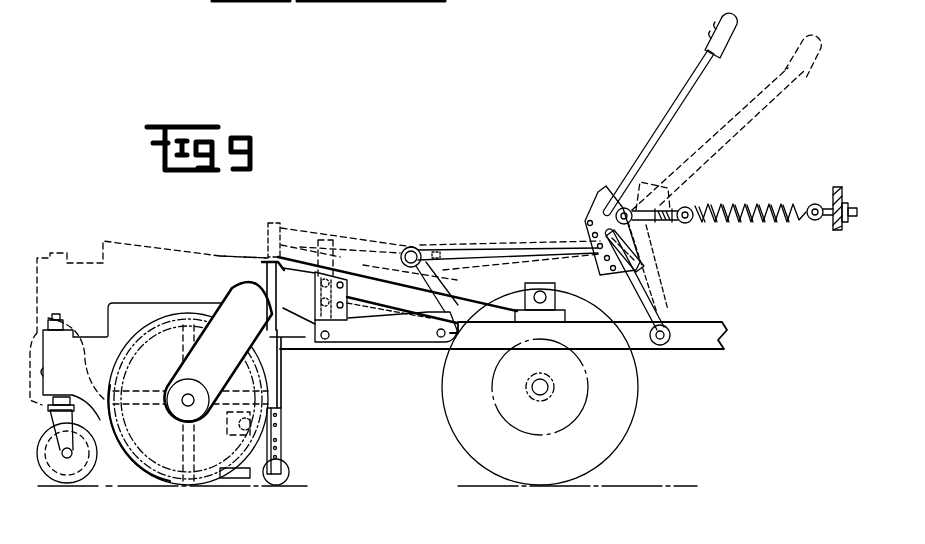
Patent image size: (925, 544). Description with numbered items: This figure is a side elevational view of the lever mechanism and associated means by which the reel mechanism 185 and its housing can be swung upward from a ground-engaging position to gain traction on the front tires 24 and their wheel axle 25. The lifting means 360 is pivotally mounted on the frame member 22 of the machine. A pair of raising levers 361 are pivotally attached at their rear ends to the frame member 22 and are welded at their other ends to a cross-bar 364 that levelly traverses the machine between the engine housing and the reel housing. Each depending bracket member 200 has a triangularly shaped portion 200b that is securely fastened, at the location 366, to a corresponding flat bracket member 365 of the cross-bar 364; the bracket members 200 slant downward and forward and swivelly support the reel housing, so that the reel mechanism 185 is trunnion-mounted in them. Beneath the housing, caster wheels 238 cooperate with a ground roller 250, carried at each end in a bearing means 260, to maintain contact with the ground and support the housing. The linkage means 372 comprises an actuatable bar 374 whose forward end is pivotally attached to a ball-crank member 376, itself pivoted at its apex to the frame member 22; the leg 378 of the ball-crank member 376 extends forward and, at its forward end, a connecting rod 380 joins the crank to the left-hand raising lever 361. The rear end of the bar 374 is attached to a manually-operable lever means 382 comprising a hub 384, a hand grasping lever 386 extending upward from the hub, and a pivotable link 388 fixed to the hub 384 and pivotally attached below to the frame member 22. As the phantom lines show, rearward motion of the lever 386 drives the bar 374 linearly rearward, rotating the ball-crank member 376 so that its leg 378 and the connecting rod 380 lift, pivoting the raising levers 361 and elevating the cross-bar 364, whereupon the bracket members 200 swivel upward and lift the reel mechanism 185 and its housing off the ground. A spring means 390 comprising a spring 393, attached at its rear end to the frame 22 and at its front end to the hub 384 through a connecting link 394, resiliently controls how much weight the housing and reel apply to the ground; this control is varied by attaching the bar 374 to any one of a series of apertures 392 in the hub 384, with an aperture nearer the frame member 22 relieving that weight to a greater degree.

The frame member 22 is at (724, 313).
The front tires 24 is at (612, 434).
The wheel axle 25 is at (540, 395).
The reel mechanism 185 is at (160, 497).
The bracket members 200 is at (263, 320).
The triangularly shaped portion 200b is at (290, 333).
The caster wheels 238 is at (65, 486).
The ground roller 250 is at (282, 486).
The bearing means 260 is at (306, 470).
The means for lifting reel mechanism 360 is at (422, 226).
The raising levers 361 is at (352, 280).
The cross-bar 364 is at (252, 253).
The flat bracket member 365 is at (305, 268).
The fastening 366 is at (268, 273).
The linkage means 372 is at (400, 360).
The actuatable bar 374 is at (508, 251).
The ball-crank member 376 is at (403, 262).
The leg 378 is at (325, 347).
The connecting rod 380 is at (320, 346).
The lever means 382 is at (603, 178).
The hub 384 is at (601, 201).
The hand grasping lever 386 is at (667, 107).
The pivotable link 388 is at (653, 297).
The spring means 390 is at (724, 199).
The apertures 392 is at (598, 276).
The spring 393 is at (746, 228).
The connecting link 394 is at (684, 207).